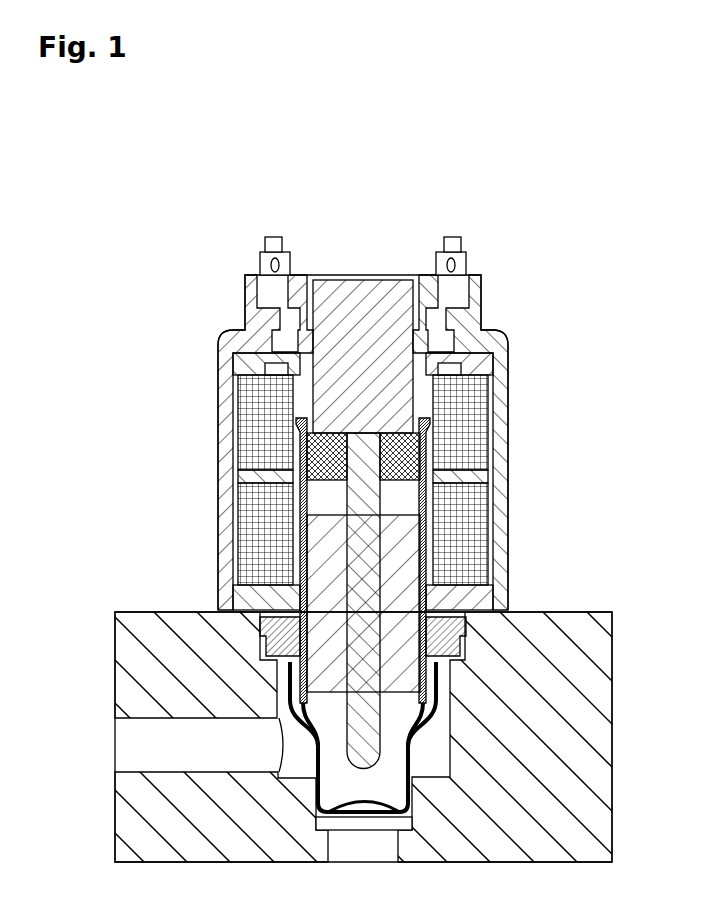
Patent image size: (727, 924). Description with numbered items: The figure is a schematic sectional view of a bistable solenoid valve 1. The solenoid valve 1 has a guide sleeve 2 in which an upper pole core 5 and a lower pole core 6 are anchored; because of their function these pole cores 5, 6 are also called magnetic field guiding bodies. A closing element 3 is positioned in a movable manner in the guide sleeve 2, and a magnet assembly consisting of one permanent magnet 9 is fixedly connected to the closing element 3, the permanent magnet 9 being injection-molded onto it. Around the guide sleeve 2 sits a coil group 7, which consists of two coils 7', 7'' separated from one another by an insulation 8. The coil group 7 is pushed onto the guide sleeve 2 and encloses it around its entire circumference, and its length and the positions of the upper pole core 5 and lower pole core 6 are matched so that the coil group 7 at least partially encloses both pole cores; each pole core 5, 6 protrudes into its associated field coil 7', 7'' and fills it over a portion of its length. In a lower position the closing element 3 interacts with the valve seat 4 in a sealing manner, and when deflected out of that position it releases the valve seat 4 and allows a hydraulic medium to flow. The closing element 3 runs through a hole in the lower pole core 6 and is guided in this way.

The solenoid valve 1 is at (122, 295).
The guide sleeve 2 is at (435, 604).
The closing element 3 is at (372, 743).
The valve seat 4 is at (370, 788).
The upper pole core 5 is at (357, 300).
The lower pole core 6 is at (400, 676).
The coil group 7 is at (302, 423).
The first coil 7' is at (402, 422).
The second coil 7'' is at (406, 534).
The insulation 8 is at (460, 477).
The permanent magnet 9 is at (412, 452).